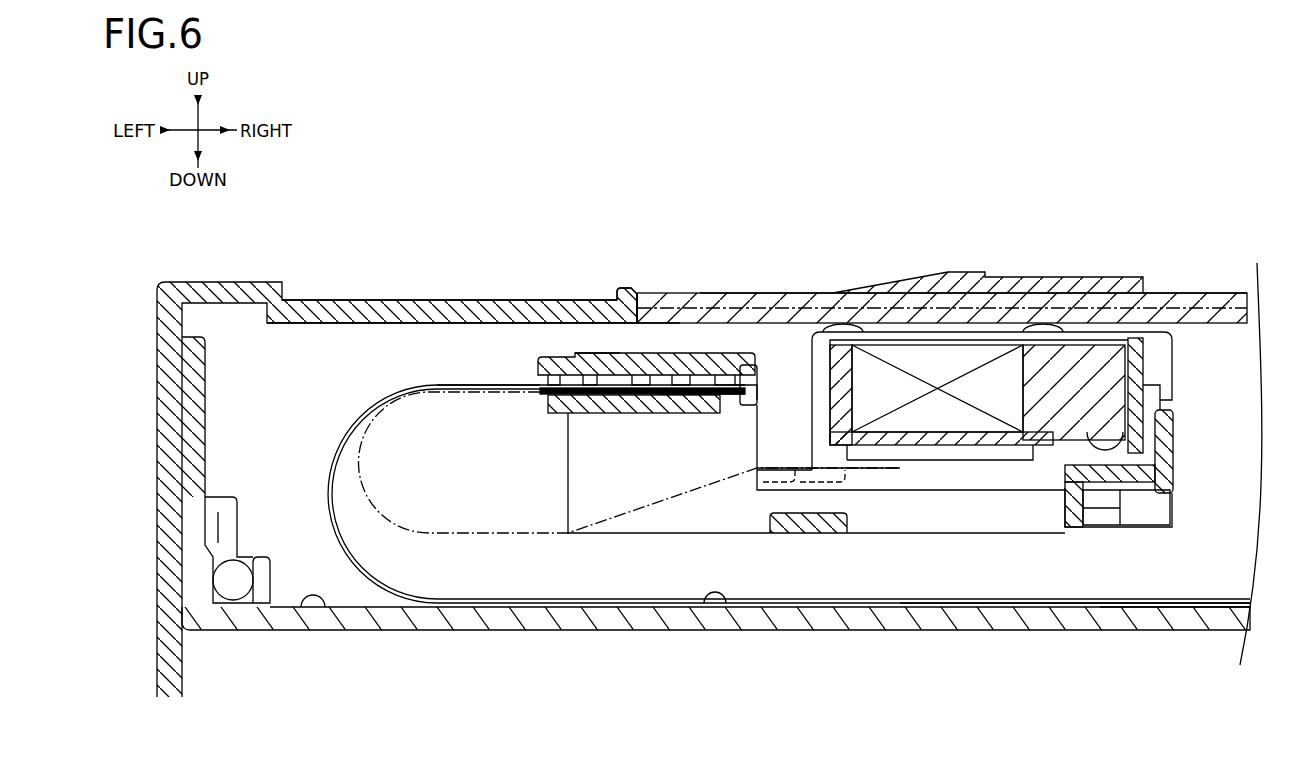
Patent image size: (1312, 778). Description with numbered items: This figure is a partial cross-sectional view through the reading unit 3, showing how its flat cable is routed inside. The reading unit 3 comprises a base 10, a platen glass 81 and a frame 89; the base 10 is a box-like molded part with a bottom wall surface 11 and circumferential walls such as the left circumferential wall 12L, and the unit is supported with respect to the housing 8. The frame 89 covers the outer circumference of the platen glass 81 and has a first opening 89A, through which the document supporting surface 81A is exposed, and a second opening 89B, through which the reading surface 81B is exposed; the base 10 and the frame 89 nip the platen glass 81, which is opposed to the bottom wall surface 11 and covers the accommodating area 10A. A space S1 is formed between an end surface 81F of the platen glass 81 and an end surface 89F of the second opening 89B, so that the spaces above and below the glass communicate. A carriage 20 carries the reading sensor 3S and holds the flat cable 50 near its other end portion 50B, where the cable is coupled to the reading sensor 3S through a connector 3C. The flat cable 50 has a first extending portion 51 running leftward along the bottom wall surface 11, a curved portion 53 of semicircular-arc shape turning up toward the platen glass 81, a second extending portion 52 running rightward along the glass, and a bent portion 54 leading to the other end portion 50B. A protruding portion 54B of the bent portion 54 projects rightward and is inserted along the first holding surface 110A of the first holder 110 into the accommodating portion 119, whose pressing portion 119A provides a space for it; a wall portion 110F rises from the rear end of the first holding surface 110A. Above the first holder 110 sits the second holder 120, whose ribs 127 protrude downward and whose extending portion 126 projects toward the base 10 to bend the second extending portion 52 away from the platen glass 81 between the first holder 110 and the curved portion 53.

The reading unit 3 is at (1210, 464).
The reading sensor 3S is at (945, 368).
The connector 3C is at (917, 472).
The housing 8 is at (155, 631).
The base 10 is at (397, 632).
The accommodating area 10A is at (1187, 559).
The bottom wall surface 11 is at (316, 600).
The left circumferential wall 12L is at (190, 397).
The carriage 20 is at (1176, 430).
The flat cable 50 is at (1002, 594).
The other end portion 50B is at (857, 472).
The first extending portion 51 is at (716, 604).
The second extending portion 52 is at (487, 385).
The curved portion 53 is at (329, 490).
The bent portion 54 is at (372, 452).
The protruding portion 54B is at (737, 404).
The platen glass 81 is at (1253, 306).
The document supporting surface 81A is at (1193, 292).
The reading surface 81B is at (733, 322).
The end surface 81F is at (609, 299).
The frame 89 is at (313, 299).
The first opening 89A is at (1146, 284).
The second opening 89B is at (826, 292).
The end surface 89F is at (650, 305).
The first holder 110 is at (667, 396).
The first holding surface 110A is at (692, 390).
The wall portion 110F is at (592, 354).
The accommodating portion 119 is at (788, 405).
The pressing portion 119A is at (762, 395).
The second holder 120 is at (567, 362).
The extending portion 126 is at (538, 380).
The ribs 127 is at (623, 414).
The space S1 is at (639, 287).